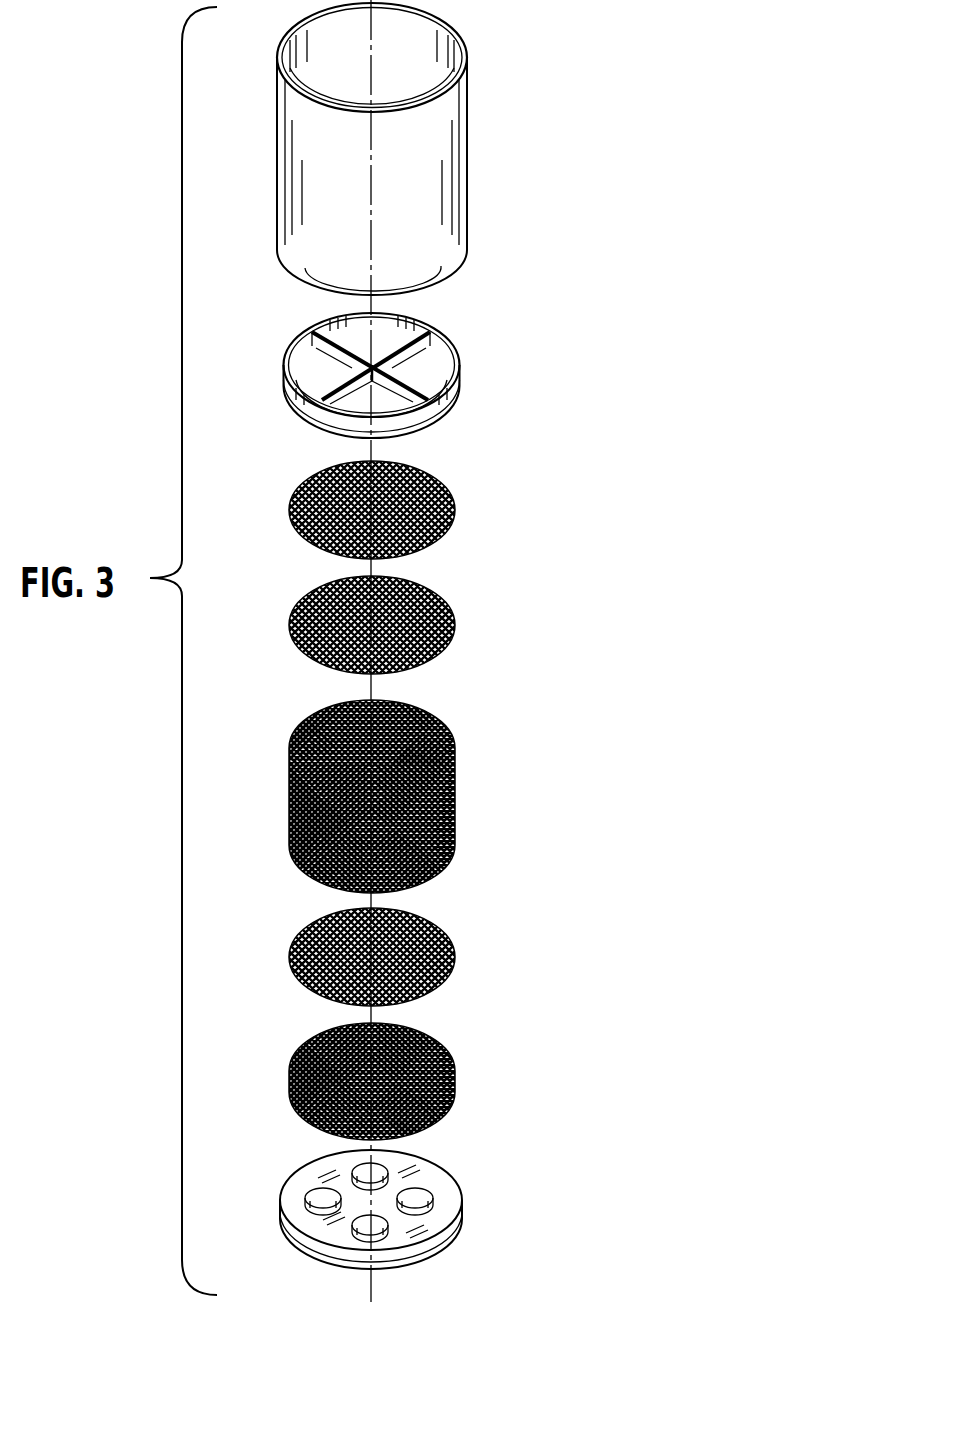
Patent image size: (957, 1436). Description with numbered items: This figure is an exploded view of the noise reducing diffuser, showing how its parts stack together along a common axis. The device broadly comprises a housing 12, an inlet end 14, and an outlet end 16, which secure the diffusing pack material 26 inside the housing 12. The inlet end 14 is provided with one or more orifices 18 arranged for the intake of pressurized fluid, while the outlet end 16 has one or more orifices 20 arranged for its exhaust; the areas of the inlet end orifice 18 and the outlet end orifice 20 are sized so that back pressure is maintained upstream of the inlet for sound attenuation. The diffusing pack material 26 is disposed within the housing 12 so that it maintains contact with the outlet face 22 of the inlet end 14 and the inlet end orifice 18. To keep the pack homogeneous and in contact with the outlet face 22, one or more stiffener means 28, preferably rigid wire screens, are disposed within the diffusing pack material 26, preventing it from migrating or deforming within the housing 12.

The housing 12 is at (485, 169).
The inlet end 14 is at (472, 1245).
The outlet end 16 is at (490, 363).
The inlet end orifice 18 is at (382, 1167).
The outlet end orifice 20 is at (360, 347).
The outlet face 22 is at (308, 1172).
The diffusing pack material 26 is at (477, 780).
The stiffener means 28 is at (470, 499).